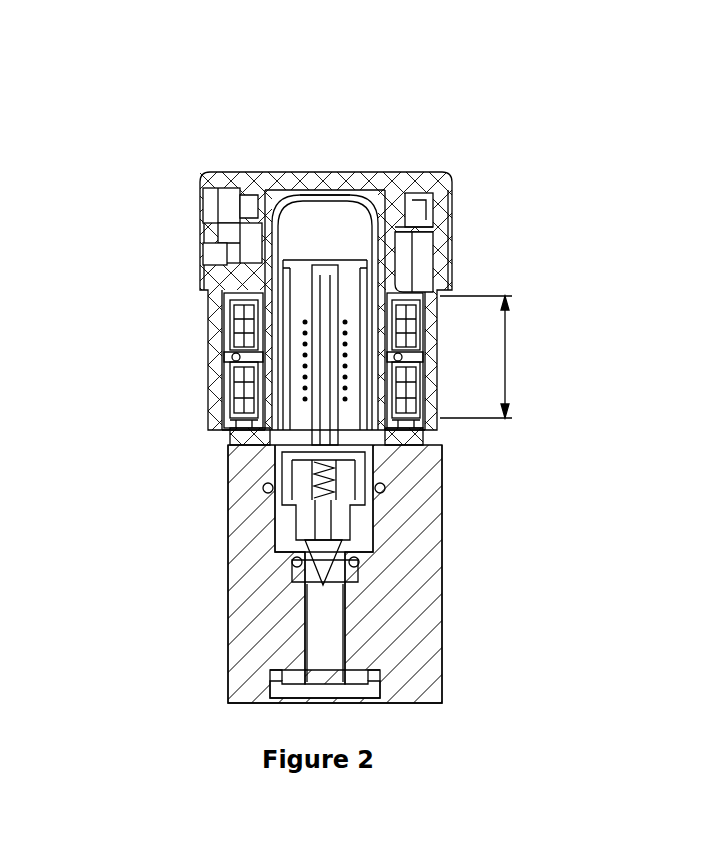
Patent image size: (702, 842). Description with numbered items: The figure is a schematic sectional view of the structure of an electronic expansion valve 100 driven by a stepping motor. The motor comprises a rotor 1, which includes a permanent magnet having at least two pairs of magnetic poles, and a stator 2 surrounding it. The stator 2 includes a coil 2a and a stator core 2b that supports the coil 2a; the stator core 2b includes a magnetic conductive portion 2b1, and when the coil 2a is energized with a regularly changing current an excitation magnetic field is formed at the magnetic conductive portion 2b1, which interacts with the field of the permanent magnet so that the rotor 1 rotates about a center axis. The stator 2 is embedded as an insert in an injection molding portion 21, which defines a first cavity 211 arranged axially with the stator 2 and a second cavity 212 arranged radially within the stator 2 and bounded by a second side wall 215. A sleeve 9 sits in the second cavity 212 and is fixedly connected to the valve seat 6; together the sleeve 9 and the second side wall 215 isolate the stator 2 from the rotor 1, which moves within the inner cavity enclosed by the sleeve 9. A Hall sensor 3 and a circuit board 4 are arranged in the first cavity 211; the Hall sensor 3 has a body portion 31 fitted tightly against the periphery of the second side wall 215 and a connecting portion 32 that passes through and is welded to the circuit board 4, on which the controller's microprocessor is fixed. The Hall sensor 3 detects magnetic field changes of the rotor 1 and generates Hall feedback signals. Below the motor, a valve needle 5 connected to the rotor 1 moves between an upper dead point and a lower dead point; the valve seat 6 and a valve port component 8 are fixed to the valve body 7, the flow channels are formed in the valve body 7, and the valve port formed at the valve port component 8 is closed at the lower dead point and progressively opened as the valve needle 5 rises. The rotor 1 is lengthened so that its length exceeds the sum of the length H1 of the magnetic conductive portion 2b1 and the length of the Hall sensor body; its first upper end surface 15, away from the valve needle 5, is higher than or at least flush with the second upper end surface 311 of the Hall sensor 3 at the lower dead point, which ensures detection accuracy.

The electronic expansion valve 100 is at (187, 187).
The rotor 1 is at (203, 278).
The stator 2 is at (296, 380).
The coil 2a is at (242, 317).
The stator core 2b is at (242, 337).
The magnetic conductive portion 2b1 is at (437, 420).
The Hall sensor 3 is at (203, 250).
The body portion 31 is at (200, 265).
The second upper end surface 311 is at (215, 172).
The connecting portion 32 is at (250, 172).
The circuit board 4 is at (435, 213).
The valve needle 5 is at (323, 533).
The valve seat 6 is at (232, 440).
The valve body 7 is at (248, 590).
The valve port component 8 is at (302, 513).
The sleeve 9 is at (347, 172).
The first upper end surface 15 is at (322, 172).
The injection molding portion 21 is at (450, 283).
The first cavity 211 is at (272, 172).
The second cavity 212 is at (440, 170).
The second side wall 215 is at (437, 248).
The length of the magnetic conductive portion H1 is at (480, 357).